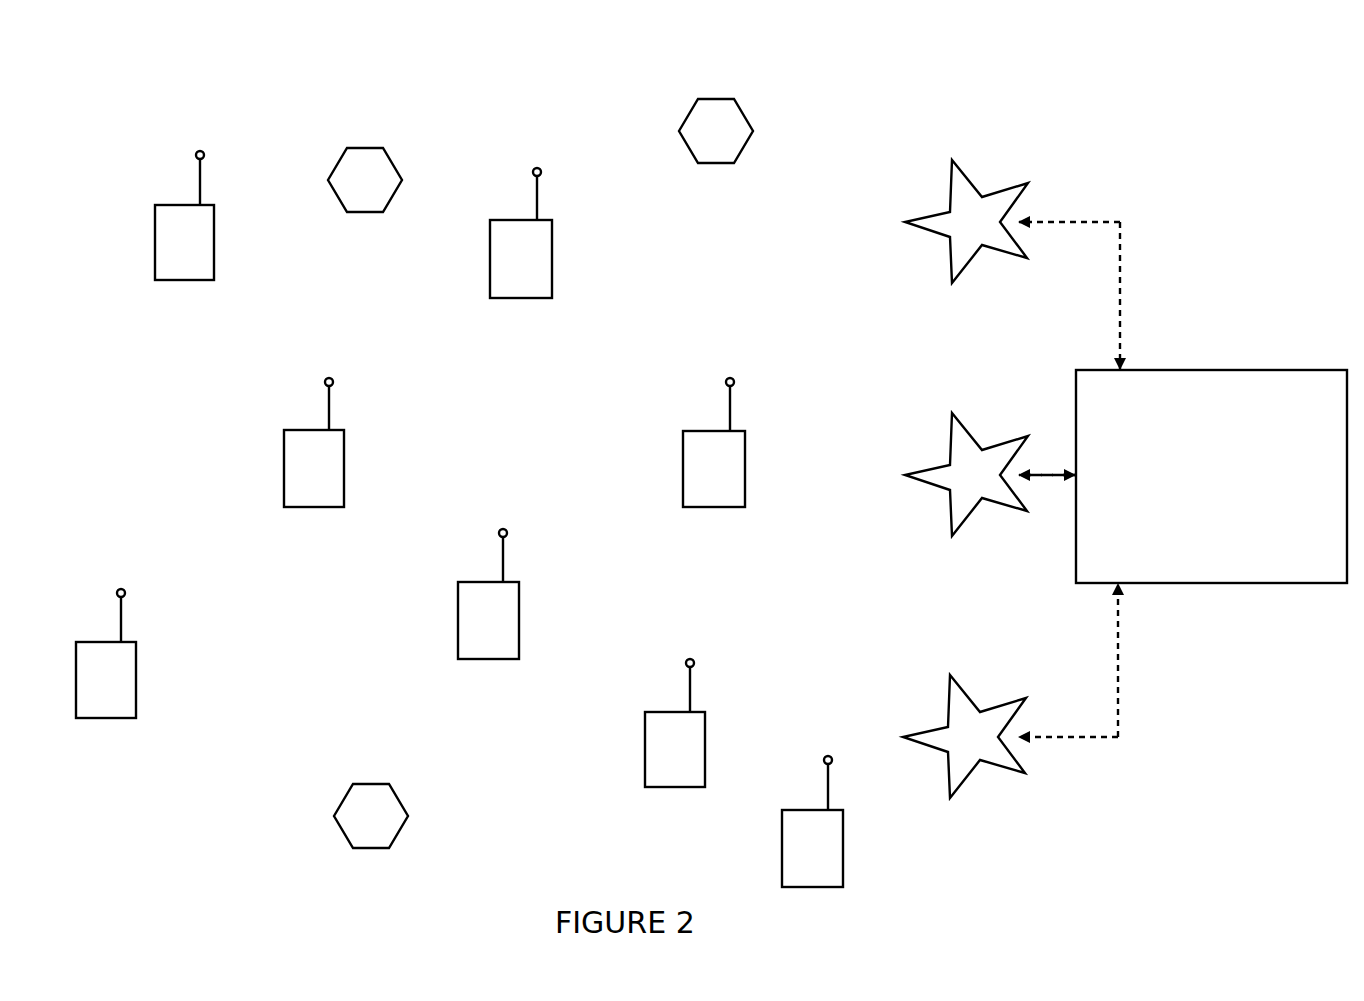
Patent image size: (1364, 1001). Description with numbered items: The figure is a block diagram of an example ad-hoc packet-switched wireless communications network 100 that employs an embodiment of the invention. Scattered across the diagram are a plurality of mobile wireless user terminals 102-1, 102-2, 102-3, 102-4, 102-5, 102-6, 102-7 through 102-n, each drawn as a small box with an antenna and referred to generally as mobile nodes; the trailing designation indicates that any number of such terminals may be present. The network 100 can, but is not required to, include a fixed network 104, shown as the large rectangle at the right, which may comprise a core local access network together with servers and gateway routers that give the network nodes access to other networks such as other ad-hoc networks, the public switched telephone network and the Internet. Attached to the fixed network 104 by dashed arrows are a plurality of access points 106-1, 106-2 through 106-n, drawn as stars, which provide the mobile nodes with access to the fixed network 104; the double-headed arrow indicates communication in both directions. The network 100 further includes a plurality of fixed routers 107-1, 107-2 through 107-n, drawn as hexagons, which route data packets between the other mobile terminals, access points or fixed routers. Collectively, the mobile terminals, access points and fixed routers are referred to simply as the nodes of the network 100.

The ad-hoc packet-switched wireless communications network 100 is at (1072, 74).
The mobile wireless user terminal 102-1 is at (205, 283).
The mobile wireless user terminal 102-2 is at (533, 300).
The mobile wireless user terminal 102-3 is at (322, 510).
The mobile wireless user terminal 102-4 is at (115, 721).
The mobile wireless user terminal 102-5 is at (495, 662).
The mobile wireless user terminal 102-6 is at (718, 512).
The mobile wireless user terminal 102-7 is at (676, 792).
The mobile wireless user terminal 102-n is at (823, 892).
The fixed network 104 is at (1236, 595).
The access point 106-1 is at (990, 262).
The access point 106-2 is at (985, 518).
The access point 106-n is at (990, 775).
The fixed router 107-1 is at (363, 214).
The fixed router 107-2 is at (713, 165).
The fixed router 107-n is at (373, 852).